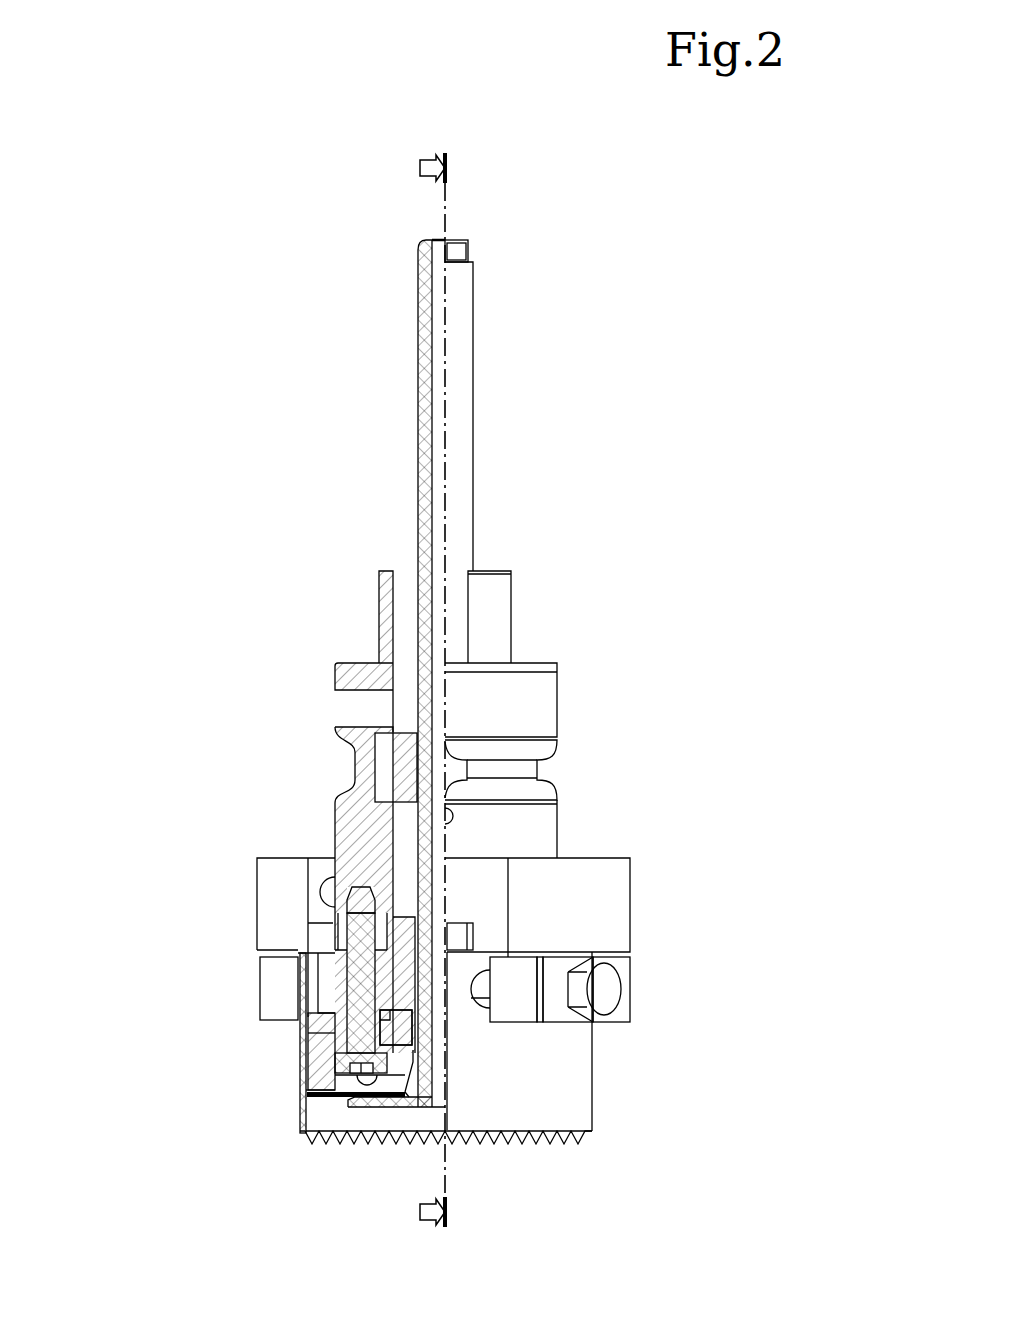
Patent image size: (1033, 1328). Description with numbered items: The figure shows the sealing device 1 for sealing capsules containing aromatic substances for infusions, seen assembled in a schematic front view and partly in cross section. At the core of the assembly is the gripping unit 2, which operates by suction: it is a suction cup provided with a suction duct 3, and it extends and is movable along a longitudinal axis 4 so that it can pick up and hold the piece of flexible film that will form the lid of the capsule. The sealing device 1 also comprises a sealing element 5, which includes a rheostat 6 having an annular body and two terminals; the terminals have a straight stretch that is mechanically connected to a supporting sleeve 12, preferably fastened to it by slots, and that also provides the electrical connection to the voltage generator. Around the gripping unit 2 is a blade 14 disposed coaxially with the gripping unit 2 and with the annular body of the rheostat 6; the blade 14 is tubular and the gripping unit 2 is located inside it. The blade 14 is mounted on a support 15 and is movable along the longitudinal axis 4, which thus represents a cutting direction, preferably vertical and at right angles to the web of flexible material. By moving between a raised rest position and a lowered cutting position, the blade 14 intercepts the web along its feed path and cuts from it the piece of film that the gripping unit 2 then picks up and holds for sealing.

The sealing device 1 is at (176, 230).
The gripping unit 2 is at (428, 397).
The suction duct 3 is at (437, 362).
The longitudinal axis 4 is at (445, 212).
The sealing element 5 is at (316, 1060).
The rheostat 6 is at (325, 1098).
The supporting sleeve 12 is at (348, 874).
The blade 14 is at (588, 1102).
The support 15 is at (405, 828).